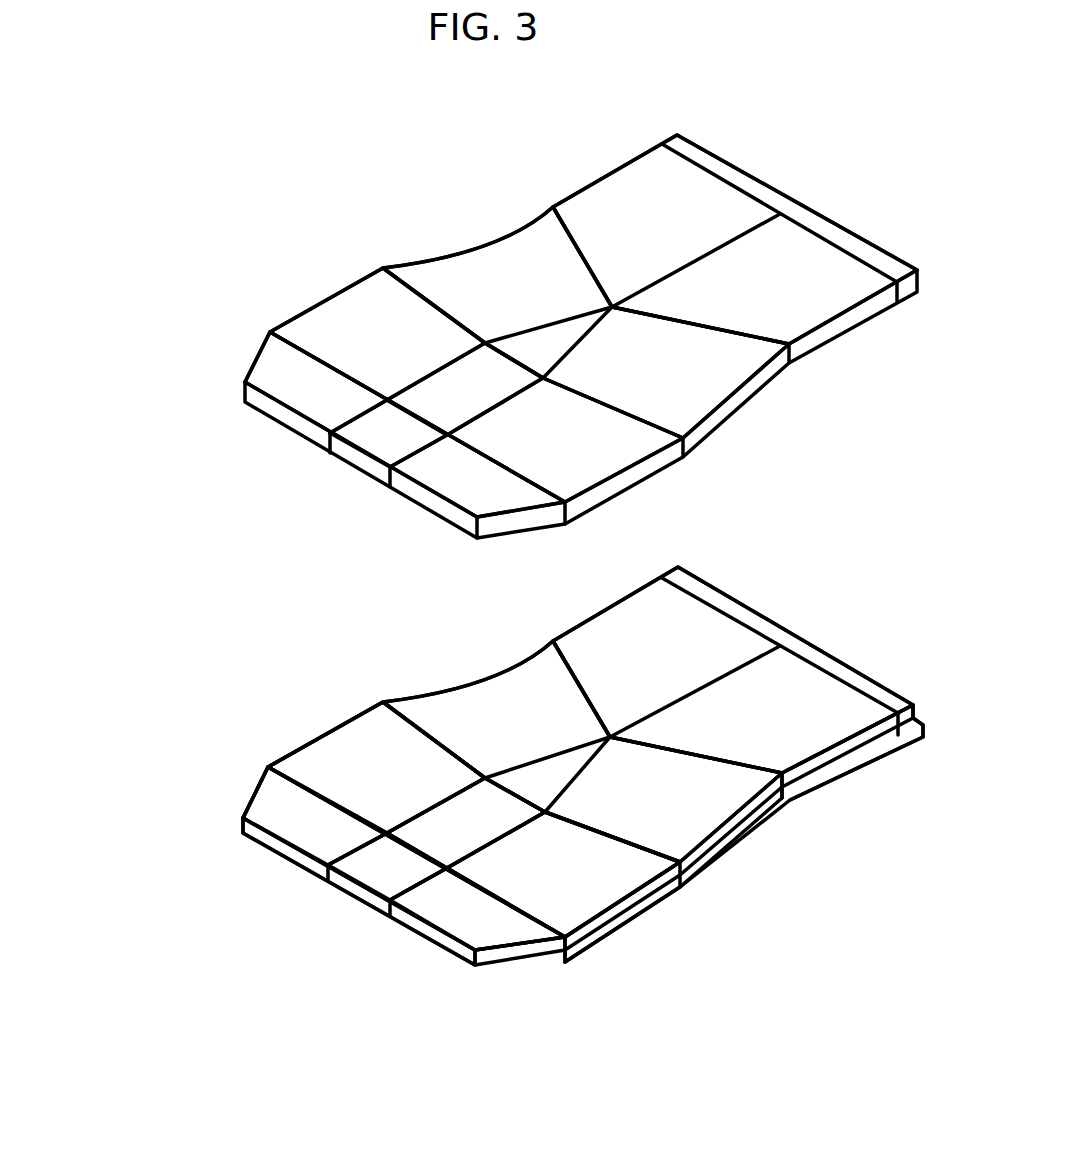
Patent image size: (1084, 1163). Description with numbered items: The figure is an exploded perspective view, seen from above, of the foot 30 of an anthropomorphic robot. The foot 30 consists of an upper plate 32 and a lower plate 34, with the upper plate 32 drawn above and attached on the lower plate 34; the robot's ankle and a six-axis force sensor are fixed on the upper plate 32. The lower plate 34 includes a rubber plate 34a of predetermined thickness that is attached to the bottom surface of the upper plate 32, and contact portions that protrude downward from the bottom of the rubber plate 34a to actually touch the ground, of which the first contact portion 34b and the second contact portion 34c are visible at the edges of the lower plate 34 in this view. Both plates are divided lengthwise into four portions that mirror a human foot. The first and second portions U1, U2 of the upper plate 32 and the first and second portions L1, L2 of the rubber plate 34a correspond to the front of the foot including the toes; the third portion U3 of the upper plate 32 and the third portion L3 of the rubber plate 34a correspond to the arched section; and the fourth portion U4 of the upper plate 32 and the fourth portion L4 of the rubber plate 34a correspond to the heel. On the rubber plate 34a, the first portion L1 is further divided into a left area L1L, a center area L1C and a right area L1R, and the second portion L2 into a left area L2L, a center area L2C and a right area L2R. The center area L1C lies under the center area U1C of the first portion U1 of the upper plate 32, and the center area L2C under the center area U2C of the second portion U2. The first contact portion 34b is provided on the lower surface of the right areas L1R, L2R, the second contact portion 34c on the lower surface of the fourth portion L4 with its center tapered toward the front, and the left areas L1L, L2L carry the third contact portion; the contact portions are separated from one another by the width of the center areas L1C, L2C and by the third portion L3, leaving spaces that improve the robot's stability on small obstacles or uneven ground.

The foot 30 is at (125, 292).
The upper plate 32 is at (320, 280).
The lower plate 34 is at (277, 869).
The rubber plate 34a is at (437, 933).
The first contact portion 34b is at (620, 918).
The second contact portion 34c is at (847, 753).
The first portion of the upper plate U1 is at (260, 329).
The second portion of the upper plate U2 is at (343, 367).
The third portion of the upper plate U3 is at (387, 258).
The fourth portion of the upper plate U4 is at (547, 195).
The center area of the first portion of the upper plate U1C is at (420, 449).
The center area of the second portion of the upper plate U2C is at (432, 406).
The first portion of the rubber plate L1 is at (262, 763).
The second portion of the rubber plate L2 is at (377, 690).
The third portion of the rubber plate L3 is at (797, 803).
The fourth portion of the rubber plate L4 is at (672, 555).
The left area of the first portion L1L is at (283, 839).
The center area of the first portion L1C is at (421, 880).
The right area of the first portion L1R is at (448, 934).
The left area of the second portion L2L is at (416, 785).
The center area of the second portion L2C is at (492, 840).
The right area of the second portion L2R is at (526, 889).